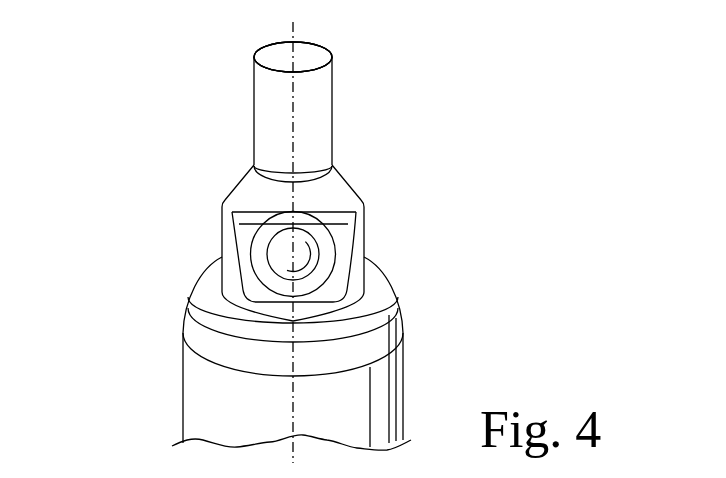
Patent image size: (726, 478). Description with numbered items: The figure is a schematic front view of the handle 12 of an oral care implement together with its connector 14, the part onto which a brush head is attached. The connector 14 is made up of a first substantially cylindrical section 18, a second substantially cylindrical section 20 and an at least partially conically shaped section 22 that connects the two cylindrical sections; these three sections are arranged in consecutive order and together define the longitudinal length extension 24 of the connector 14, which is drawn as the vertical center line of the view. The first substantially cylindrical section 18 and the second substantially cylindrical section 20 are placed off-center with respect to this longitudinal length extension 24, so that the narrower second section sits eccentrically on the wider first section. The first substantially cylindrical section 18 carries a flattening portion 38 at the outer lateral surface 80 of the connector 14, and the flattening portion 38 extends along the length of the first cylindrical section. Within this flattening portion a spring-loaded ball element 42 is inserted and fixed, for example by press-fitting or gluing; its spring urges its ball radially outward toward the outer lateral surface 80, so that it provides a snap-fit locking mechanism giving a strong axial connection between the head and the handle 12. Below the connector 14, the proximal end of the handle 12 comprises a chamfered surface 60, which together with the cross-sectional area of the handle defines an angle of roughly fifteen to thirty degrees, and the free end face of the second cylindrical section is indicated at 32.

The handle 12 is at (213, 390).
The connector 14 is at (368, 237).
The first substantially cylindrical section 18 is at (356, 271).
The second substantially cylindrical section 20 is at (312, 120).
The at least partially conically shaped section 22 is at (253, 197).
The longitudinal length extension 24 is at (327, 54).
The pin end face 32 is at (277, 52).
The flattening portion 38 is at (252, 288).
The spring-loaded ball element 42 is at (280, 257).
The chamfered surface 60 is at (368, 305).
The outer lateral surface 80 is at (343, 148).